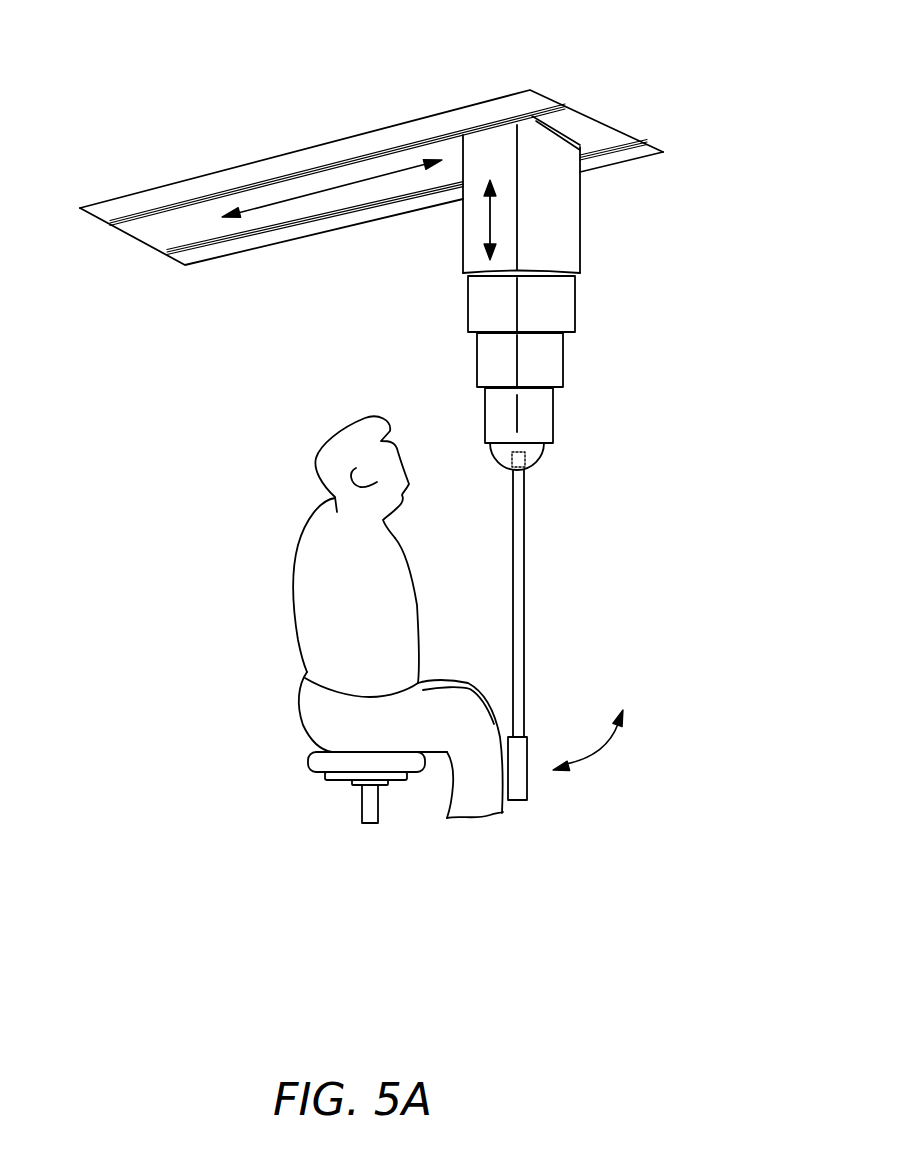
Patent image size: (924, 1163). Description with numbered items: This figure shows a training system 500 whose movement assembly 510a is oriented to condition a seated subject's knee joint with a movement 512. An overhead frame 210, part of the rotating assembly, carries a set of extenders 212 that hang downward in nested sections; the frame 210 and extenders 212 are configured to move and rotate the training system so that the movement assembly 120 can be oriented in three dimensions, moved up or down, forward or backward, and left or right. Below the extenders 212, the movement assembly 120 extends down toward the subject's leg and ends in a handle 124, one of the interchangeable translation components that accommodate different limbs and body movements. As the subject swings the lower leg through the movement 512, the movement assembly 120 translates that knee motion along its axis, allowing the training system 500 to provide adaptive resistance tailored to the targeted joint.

The training system 500 is at (140, 62).
The frame 210 is at (273, 142).
The extenders 212 is at (580, 233).
The movement assembly 510a is at (700, 563).
The movement assembly 120 is at (525, 598).
The handle 124 is at (522, 800).
The movement 512 is at (597, 748).